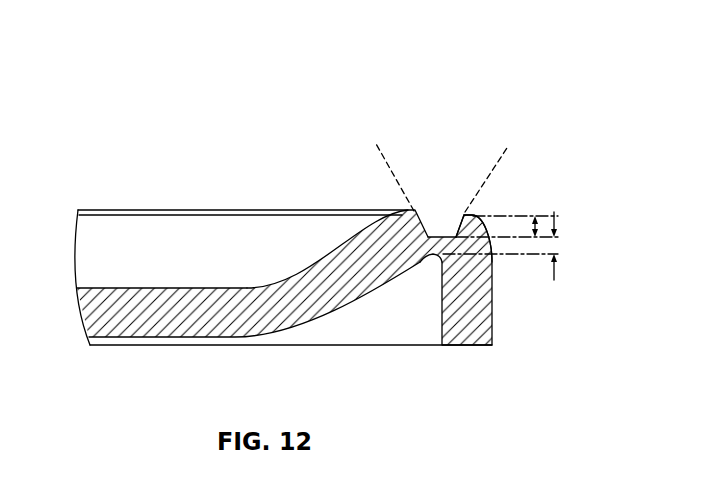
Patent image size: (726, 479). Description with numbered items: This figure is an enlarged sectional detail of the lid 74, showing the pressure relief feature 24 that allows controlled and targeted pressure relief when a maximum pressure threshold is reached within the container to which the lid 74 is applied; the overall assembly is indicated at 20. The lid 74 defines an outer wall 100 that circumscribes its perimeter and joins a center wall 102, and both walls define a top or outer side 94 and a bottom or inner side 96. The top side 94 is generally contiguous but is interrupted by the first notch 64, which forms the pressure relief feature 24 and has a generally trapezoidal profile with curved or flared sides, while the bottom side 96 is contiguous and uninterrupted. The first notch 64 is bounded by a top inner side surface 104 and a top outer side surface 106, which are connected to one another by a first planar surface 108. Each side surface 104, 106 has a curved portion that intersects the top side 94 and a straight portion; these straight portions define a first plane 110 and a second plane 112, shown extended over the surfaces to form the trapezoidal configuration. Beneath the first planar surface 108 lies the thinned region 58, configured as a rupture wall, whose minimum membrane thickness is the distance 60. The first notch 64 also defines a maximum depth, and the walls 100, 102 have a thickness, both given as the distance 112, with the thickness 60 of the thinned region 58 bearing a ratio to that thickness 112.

The dispensing closure assembly 20 is at (543, 62).
The pressure relief feature 24 is at (520, 186).
The thinned region 58 is at (433, 257).
The minimum membrane thickness 60 is at (554, 270).
The first notch 64 is at (460, 213).
The lid 74 is at (140, 243).
The top side 94 is at (195, 287).
The bottom side 96 is at (220, 340).
The outer wall 100 is at (492, 312).
The center wall 102 is at (110, 288).
The top inner side surface 104 is at (435, 230).
The top outer side surface 106 is at (470, 213).
The first planar surface 108 is at (444, 210).
The first plane 110 is at (382, 152).
The second plane 112 is at (498, 160).